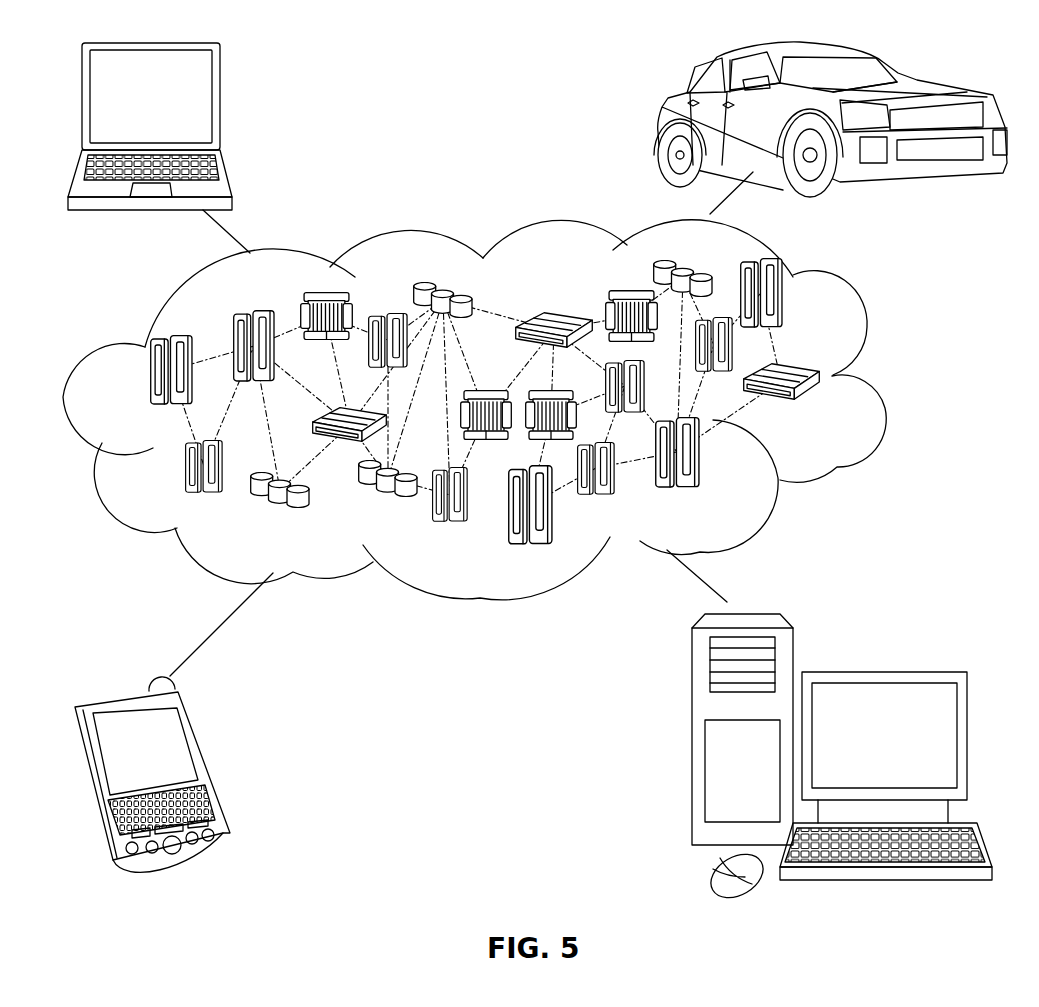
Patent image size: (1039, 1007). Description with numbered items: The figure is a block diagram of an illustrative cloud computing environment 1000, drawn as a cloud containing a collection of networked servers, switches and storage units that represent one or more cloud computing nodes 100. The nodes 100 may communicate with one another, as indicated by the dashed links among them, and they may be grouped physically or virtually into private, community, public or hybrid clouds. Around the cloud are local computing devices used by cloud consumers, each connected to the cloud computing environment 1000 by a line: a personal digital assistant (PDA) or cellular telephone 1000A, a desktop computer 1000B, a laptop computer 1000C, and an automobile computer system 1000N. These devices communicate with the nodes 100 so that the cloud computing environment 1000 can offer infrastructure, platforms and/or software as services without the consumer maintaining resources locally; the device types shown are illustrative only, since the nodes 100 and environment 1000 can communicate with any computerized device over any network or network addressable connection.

The laptop computer 1000C is at (220, 107).
The automobile computer system 1000N is at (658, 121).
The cloud computing environment 1000 is at (877, 381).
The cloud computing nodes 100 is at (830, 409).
The personal digital assistant (PDA) or cellular telephone 1000A is at (212, 764).
The desktop computer 1000B is at (880, 672).